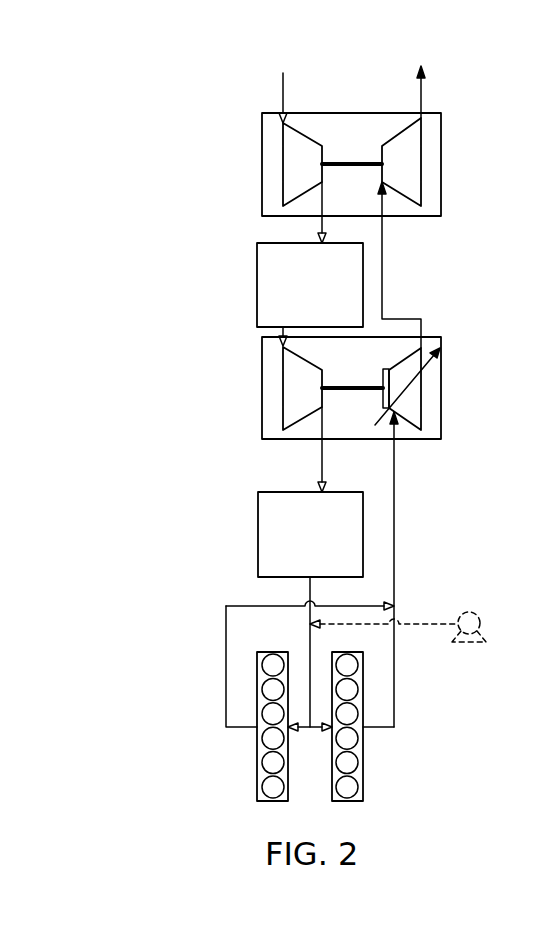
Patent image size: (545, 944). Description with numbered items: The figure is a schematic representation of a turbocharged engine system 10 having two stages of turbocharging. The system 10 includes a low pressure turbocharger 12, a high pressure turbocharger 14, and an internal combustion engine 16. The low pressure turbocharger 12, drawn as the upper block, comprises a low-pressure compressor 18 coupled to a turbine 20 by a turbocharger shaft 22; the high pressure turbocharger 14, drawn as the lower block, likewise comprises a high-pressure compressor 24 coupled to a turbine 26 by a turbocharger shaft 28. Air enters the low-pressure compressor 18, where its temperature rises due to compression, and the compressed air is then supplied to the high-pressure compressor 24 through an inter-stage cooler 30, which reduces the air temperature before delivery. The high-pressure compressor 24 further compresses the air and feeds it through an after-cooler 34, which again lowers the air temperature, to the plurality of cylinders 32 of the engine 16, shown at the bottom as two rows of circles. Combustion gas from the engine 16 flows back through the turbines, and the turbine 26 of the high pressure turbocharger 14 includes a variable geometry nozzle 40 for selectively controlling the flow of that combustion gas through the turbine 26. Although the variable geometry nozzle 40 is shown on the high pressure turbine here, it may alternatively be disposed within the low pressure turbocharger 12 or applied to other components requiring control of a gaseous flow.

The engine system 10 is at (158, 92).
The low pressure turbocharger 12 is at (441, 128).
The high pressure turbocharger 14 is at (441, 340).
The internal combustion engine 16 is at (214, 682).
The low-pressure compressor 18 is at (283, 163).
The turbine 20 is at (421, 183).
The turbocharger shaft 22 is at (338, 161).
The high-pressure compressor 24 is at (283, 392).
The turbine 26 is at (421, 408).
The turbocharger shaft 28 is at (338, 385).
The inter-stage cooler 30 is at (257, 285).
The cylinders 32 is at (347, 762).
The after-cooler 34 is at (258, 534).
The variable geometry nozzle 40 is at (380, 400).